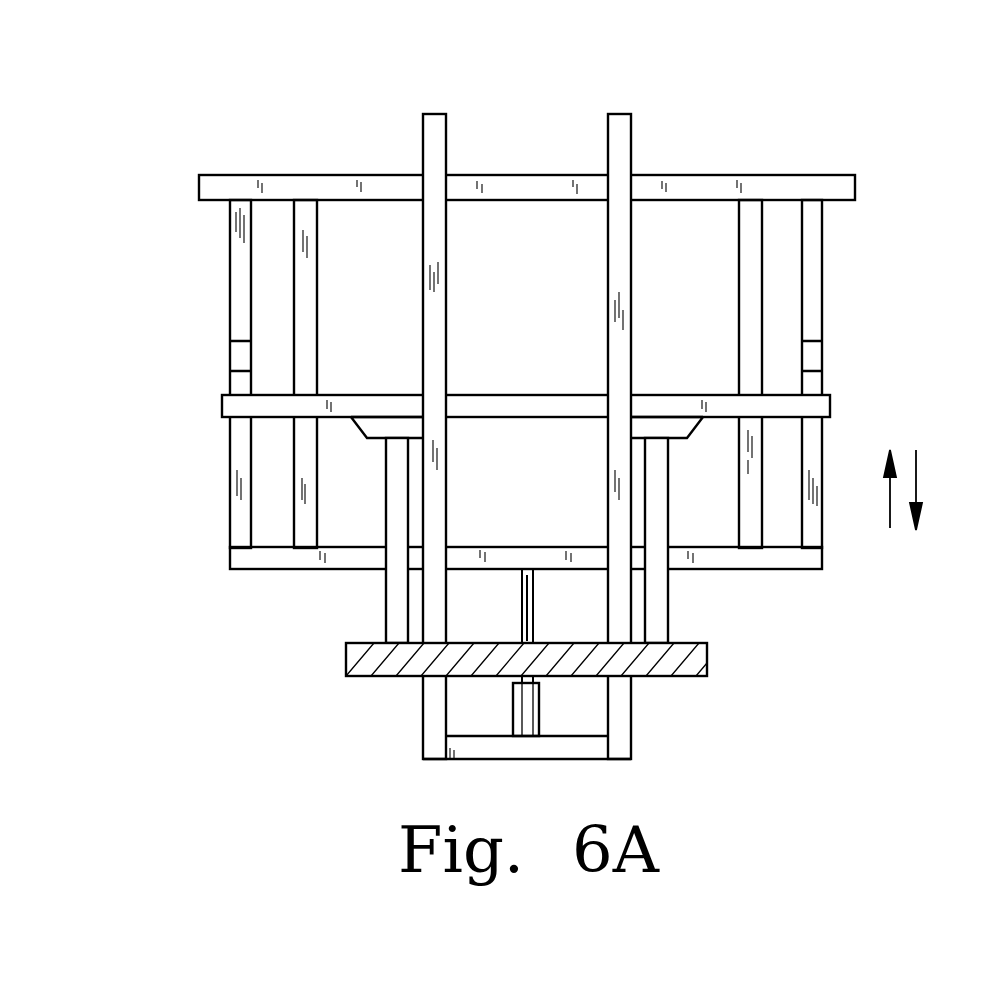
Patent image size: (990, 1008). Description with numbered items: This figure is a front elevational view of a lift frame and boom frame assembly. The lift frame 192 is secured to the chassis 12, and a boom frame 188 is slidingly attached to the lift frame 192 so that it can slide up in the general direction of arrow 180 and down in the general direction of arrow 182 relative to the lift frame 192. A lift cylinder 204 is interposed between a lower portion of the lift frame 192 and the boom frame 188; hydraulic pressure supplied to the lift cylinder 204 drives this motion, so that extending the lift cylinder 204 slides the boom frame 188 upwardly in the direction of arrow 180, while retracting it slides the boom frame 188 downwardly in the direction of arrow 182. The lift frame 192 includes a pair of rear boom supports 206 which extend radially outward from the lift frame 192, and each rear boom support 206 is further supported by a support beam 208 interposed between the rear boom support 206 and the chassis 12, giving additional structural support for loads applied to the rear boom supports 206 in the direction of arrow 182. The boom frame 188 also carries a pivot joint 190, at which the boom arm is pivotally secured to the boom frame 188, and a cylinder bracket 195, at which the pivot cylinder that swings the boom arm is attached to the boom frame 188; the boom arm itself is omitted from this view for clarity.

The chassis 12 is at (676, 672).
The arrow 180 is at (888, 497).
The arrow 182 is at (917, 481).
The boom frame 188 is at (338, 175).
The pivot joint 190 is at (240, 253).
The lift frame 192 is at (423, 127).
The cylinder bracket 195 is at (238, 355).
The lift cylinder 204 is at (528, 705).
The rear boom support 206 is at (227, 407).
The support beam 208 is at (395, 603).